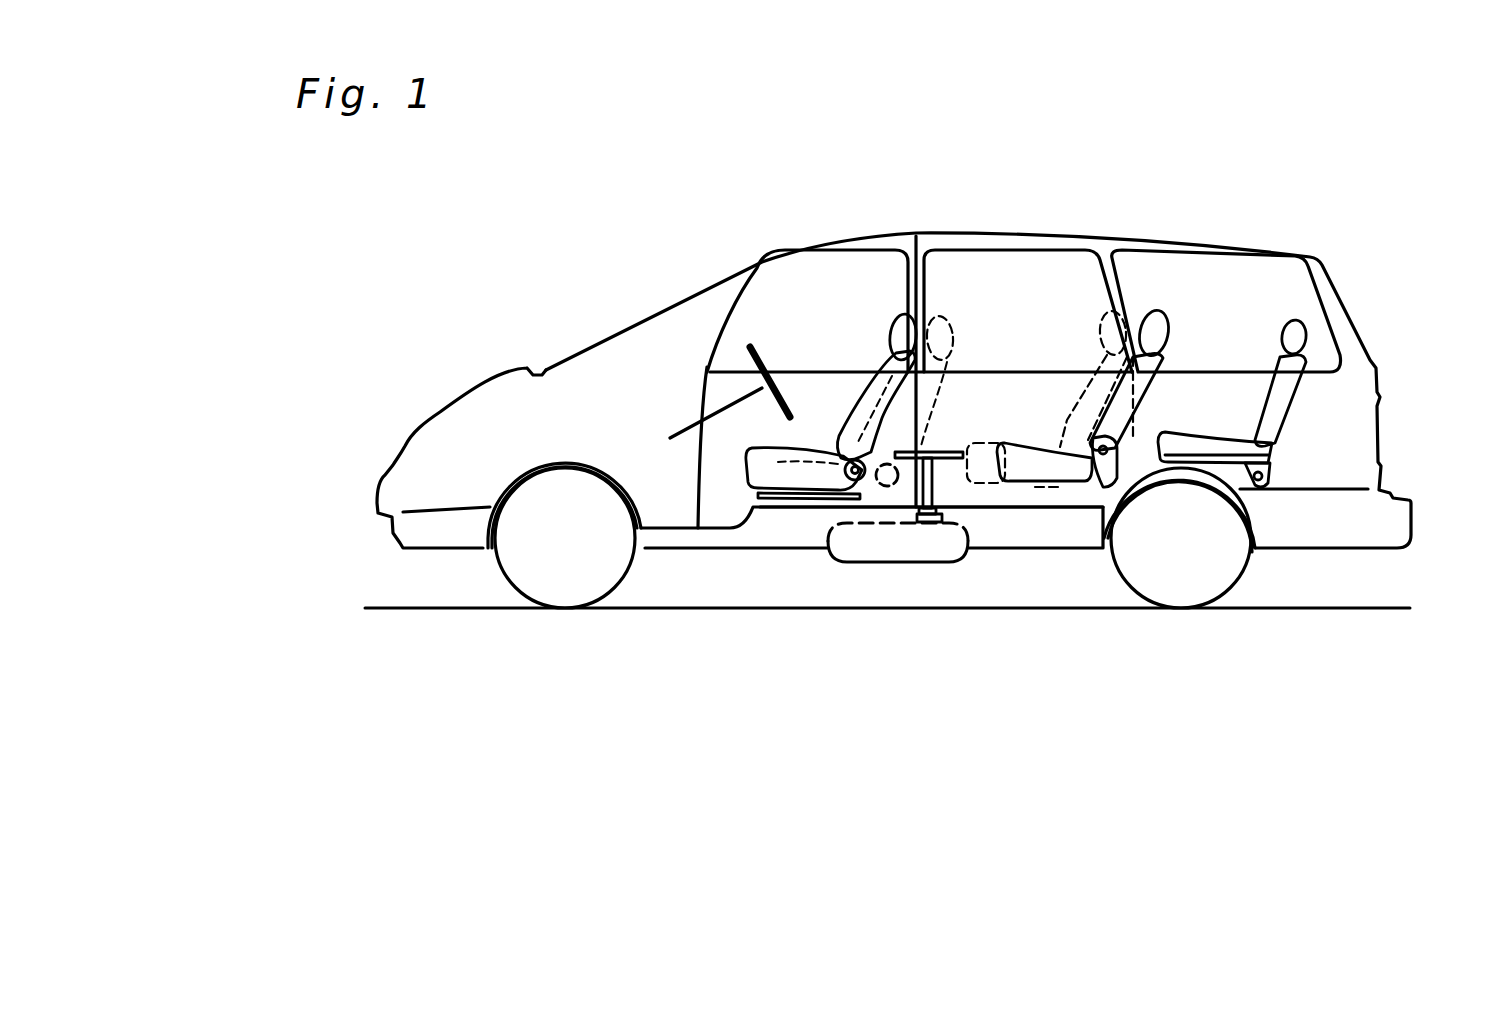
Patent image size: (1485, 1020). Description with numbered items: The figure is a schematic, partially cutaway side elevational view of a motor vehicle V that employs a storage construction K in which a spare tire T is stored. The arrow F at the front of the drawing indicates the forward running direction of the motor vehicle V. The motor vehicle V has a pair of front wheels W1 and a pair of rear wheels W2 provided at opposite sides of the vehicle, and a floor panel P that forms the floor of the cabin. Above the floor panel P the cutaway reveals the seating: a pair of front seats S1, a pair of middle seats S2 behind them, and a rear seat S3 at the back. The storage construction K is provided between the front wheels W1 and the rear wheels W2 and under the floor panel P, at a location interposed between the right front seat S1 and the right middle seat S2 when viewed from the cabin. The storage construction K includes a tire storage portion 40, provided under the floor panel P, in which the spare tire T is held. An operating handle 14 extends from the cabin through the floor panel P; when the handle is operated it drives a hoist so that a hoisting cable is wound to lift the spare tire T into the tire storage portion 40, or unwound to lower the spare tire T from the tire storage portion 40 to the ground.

The motor vehicle V is at (1395, 372).
The front seats S1 is at (885, 362).
The middle seats S2 is at (1150, 325).
The rear seat S3 is at (1293, 330).
The operating handle 14 is at (948, 452).
The spare tire T is at (877, 553).
The tire storage portion 40 is at (933, 578).
The floor panel P is at (1007, 507).
The storage construction K is at (832, 620).
The front wheels W1 is at (565, 588).
The rear wheels W2 is at (1177, 585).
The arrow indicating forward running direction F is at (318, 492).